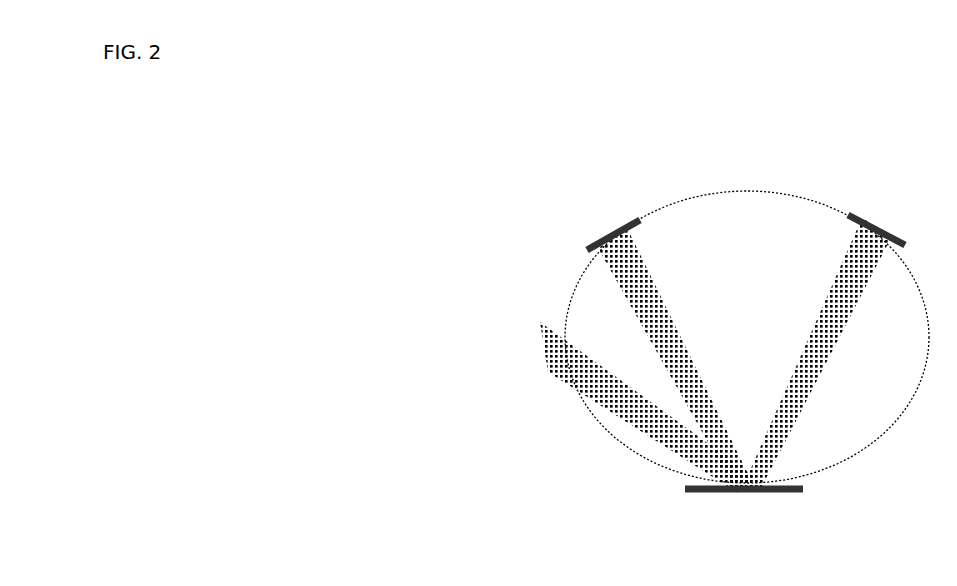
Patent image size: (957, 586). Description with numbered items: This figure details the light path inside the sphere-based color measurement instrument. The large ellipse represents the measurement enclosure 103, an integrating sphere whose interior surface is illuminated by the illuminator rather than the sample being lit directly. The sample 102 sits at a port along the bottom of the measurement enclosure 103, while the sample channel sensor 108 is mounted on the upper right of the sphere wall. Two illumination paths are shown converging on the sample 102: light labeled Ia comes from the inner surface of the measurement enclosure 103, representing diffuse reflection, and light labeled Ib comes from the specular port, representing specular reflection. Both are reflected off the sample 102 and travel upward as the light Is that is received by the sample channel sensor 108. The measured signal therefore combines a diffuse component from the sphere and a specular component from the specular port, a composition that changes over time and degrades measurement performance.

The measurement enclosure 103 is at (471, 141).
The sample channel sensor 108 is at (894, 223).
The sample 102 is at (744, 509).